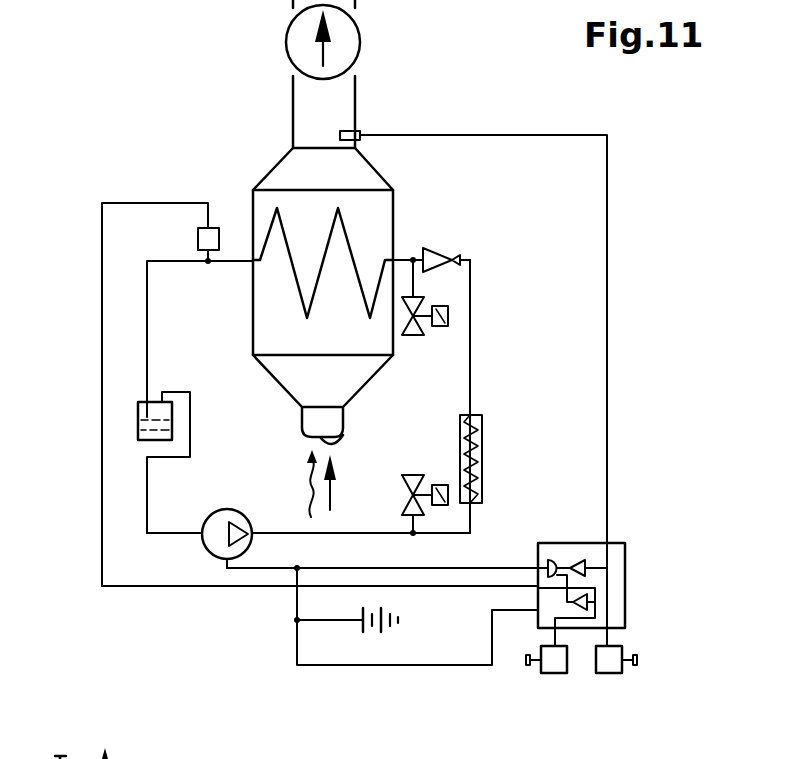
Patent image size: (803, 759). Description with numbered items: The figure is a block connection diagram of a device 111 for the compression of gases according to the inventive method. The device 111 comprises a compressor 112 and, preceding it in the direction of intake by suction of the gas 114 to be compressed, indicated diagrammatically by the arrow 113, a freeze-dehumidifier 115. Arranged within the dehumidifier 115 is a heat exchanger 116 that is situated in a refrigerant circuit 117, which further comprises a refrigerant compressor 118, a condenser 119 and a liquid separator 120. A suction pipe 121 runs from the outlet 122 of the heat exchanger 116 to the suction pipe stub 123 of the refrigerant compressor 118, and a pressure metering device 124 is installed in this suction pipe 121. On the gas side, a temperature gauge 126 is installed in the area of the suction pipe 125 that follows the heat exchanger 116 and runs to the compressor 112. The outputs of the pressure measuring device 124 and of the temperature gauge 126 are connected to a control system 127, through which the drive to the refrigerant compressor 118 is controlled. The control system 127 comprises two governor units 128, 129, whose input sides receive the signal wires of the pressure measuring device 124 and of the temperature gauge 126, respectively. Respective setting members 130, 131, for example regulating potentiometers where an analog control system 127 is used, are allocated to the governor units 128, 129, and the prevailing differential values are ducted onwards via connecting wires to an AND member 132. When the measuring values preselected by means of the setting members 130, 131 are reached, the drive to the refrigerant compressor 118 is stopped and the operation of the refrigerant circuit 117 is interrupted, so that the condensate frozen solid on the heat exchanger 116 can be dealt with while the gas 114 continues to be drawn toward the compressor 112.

The device for compression of gases 111 is at (238, 90).
The compressor 112 is at (357, 36).
The arrow 113 is at (332, 490).
The gas 114 is at (305, 482).
The freeze-dehumidifier 115 is at (240, 175).
The heat exchanger 116 is at (350, 238).
The refrigerant circuit 117 is at (126, 463).
The refrigerant compressor 118 is at (203, 545).
The condenser 119 is at (483, 443).
The liquid separator 120 is at (134, 416).
The suction pipe 121 is at (147, 350).
The outlet 122 is at (232, 250).
The suction pipe stub 123 is at (187, 532).
The pressure metering device 124 is at (190, 240).
The suction pipe 125 is at (355, 108).
The temperature gauge 126 is at (360, 131).
The control system 127 is at (617, 543).
The governor unit 128 is at (590, 602).
The governor unit 129 is at (585, 566).
The setting member 130 is at (553, 673).
The setting member 131 is at (608, 673).
The AND member 132 is at (550, 560).